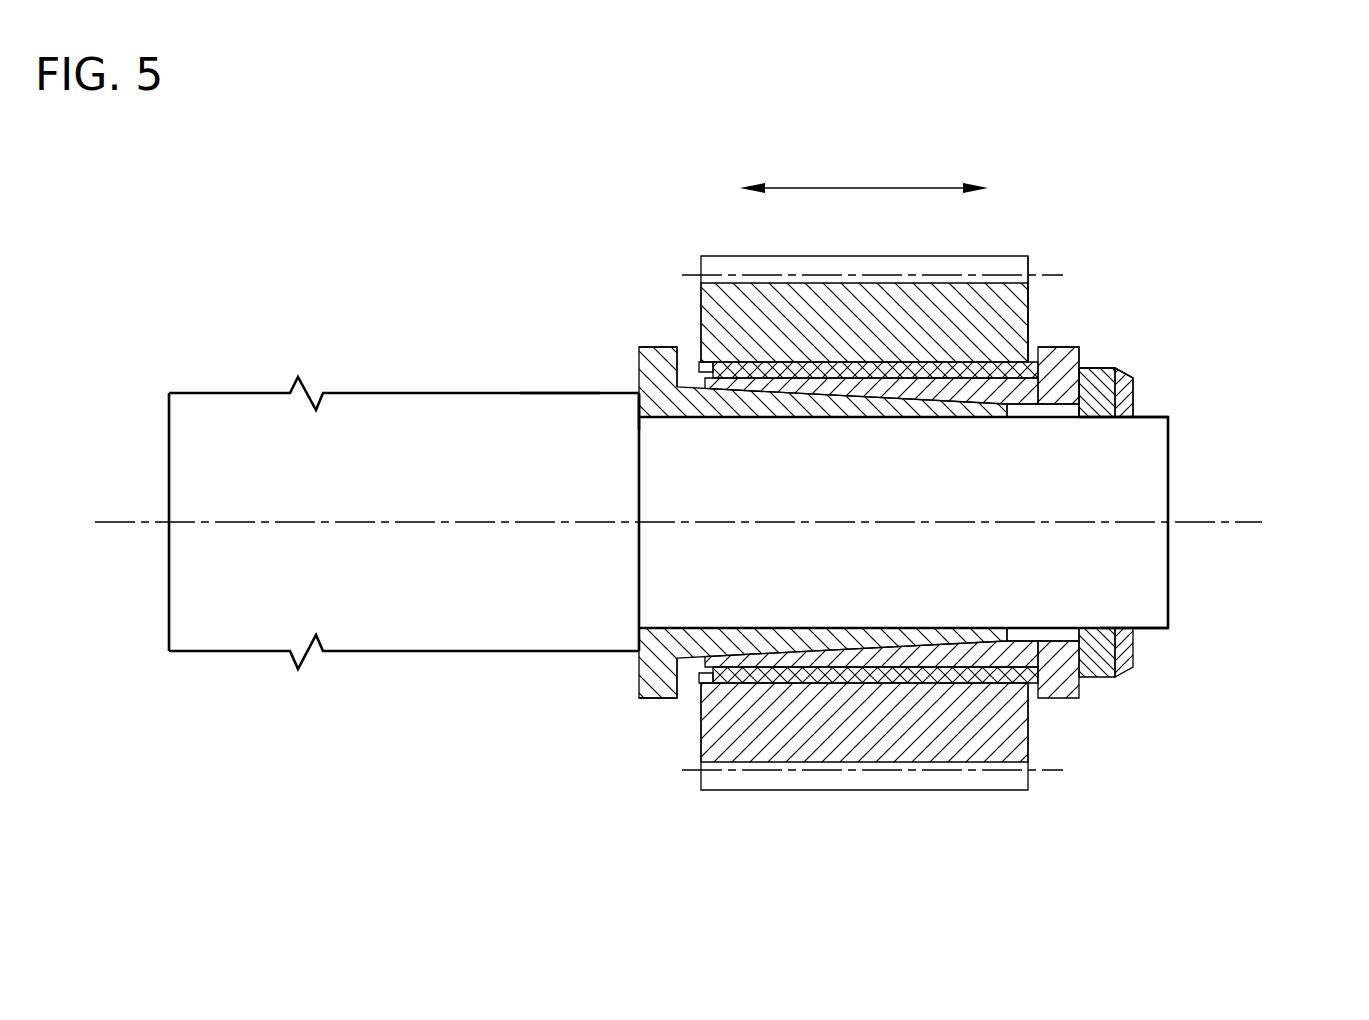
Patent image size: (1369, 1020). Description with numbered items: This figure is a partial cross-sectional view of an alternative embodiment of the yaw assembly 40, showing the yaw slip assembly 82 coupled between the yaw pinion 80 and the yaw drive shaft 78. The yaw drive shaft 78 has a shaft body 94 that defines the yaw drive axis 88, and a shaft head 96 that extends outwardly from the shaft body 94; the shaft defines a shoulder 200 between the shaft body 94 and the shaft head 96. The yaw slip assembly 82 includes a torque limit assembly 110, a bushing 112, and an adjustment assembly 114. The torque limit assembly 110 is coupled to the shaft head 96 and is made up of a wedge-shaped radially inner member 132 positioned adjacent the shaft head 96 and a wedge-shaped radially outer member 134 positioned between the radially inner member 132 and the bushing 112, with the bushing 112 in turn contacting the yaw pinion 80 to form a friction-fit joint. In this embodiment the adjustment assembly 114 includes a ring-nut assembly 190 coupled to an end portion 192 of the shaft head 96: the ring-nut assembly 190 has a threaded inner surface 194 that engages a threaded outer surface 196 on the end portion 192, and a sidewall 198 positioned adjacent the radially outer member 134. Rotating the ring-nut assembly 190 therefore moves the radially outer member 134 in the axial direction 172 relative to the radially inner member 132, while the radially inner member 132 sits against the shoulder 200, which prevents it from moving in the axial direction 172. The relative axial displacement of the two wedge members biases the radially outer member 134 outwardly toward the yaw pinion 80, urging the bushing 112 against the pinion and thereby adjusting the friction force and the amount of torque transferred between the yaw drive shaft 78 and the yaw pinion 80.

The yaw assembly 40 is at (1199, 255).
The yaw drive shaft 78 is at (506, 364).
The yaw pinion 80 is at (1054, 261).
The yaw slip assembly 82 is at (651, 335).
The yaw drive axis 88 is at (1253, 522).
The shaft body 94 is at (550, 417).
The shaft head 96 is at (1130, 487).
The torque limit assembly 110 is at (1214, 310).
The bushing 112 is at (1005, 360).
The adjustment assembly 114 is at (1152, 374).
The radially inner member 132 is at (723, 407).
The radially outer member 134 is at (1060, 352).
The axial direction 172 is at (846, 188).
The ring-nut assembly 190 is at (1140, 395).
The end portion 192 is at (1135, 610).
The threaded inner surface 194 is at (1098, 417).
The threaded outer surface 196 is at (1085, 418).
The sidewall 198 is at (1100, 372).
The shoulder 200 is at (632, 408).